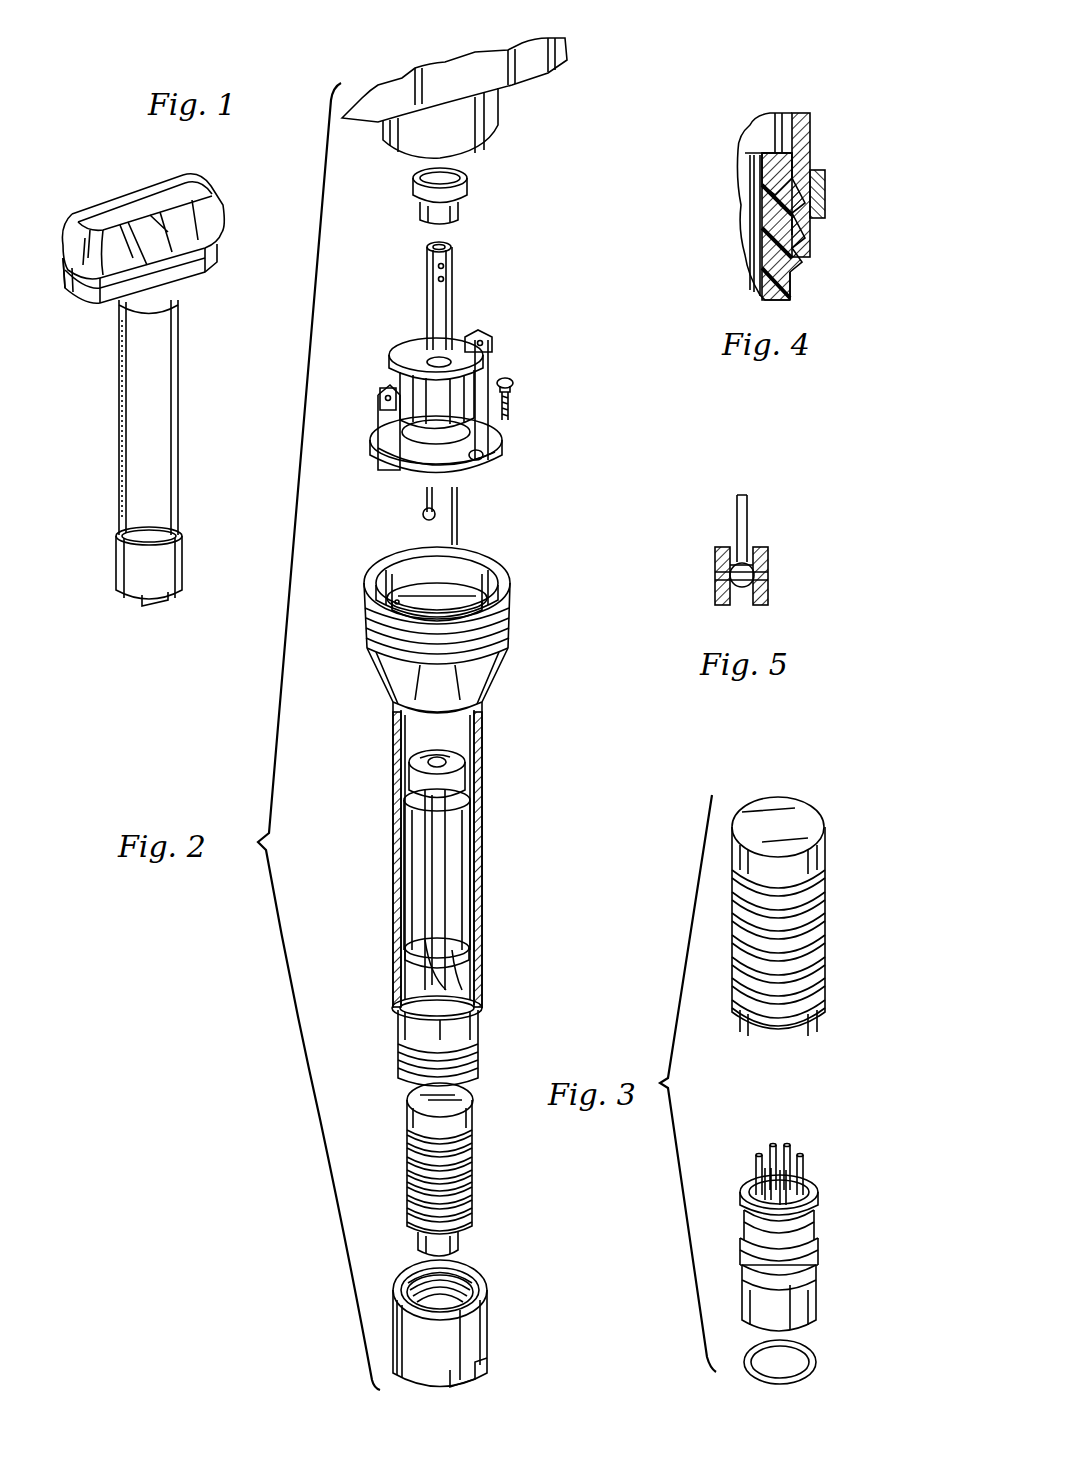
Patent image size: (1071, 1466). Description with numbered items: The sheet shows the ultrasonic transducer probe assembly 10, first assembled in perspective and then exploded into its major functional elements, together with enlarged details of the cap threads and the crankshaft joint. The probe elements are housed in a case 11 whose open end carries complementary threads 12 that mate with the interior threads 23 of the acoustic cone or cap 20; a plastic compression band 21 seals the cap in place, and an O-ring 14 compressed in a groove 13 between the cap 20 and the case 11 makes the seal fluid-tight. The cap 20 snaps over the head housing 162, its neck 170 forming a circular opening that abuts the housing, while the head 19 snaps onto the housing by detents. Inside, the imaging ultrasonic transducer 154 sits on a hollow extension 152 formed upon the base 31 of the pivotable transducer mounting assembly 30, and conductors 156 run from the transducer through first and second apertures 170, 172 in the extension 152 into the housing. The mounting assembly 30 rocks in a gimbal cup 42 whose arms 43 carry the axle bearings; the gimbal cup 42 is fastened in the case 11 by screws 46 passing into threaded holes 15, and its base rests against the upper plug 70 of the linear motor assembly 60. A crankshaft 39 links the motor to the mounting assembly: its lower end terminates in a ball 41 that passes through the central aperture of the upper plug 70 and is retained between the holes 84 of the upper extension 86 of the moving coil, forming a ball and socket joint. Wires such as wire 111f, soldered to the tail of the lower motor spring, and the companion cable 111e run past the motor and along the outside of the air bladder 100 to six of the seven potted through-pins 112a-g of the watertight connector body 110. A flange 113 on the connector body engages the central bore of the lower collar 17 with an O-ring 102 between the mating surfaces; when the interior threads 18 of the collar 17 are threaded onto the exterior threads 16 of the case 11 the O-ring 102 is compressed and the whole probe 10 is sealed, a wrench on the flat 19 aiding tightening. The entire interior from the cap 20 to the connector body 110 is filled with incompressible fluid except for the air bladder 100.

In FIG. 1, the ultrasonic transducer probe assembly 10 is at (114, 394).
In FIG. 1, the case 11 is at (170, 380).
In FIG. 2, the case 11 is at (395, 735).
In FIG. 4, the case 11 is at (790, 296).
In FIG. 2, the complementary threads 12 is at (508, 626).
In FIG. 4, the complementary threads 12 is at (798, 270).
In FIG. 2, the groove 13 is at (508, 600).
In FIG. 4, the groove 13 is at (770, 155).
In FIG. 4, the O-ring 14 is at (770, 182).
In FIG. 2, the threaded holes 15 is at (400, 600).
In FIG. 2, the exterior threads 16 is at (475, 1062).
In FIG. 1, the lower sleeve 17 is at (128, 574).
In FIG. 2, the lower sleeve 17 is at (478, 1325).
In FIG. 2, the interior threads 18 is at (428, 1276).
In FIG. 1, the flat 19 is at (212, 184).
In FIG. 2, the flat 19 is at (575, 45).
In FIG. 1, the acoustic cone or cap 20 is at (222, 214).
In FIG. 4, the acoustic cone or cap 20 is at (812, 125).
In FIG. 4, the plastic compression band 21 is at (826, 200).
In FIG. 4, the interior threads 23 is at (768, 236).
In FIG. 2, the pivotable transducer mounting assembly 30 is at (505, 448).
In FIG. 2, the base 31 is at (465, 367).
In FIG. 2, the crankshaft 39 is at (424, 494).
In FIG. 5, the crankshaft 39 is at (748, 498).
In FIG. 2, the ball 41 is at (424, 516).
In FIG. 5, the ball 41 is at (742, 588).
In FIG. 2, the gimbal cup 42 is at (478, 480).
In FIG. 2, the arms 43 is at (384, 440).
In FIG. 2, the screws 46 is at (512, 400).
In FIG. 2, the linear motor assembly 60 is at (480, 876).
In FIG. 2, the upper plug 70 is at (455, 766).
In FIG. 5, the holes 84 is at (716, 576).
In FIG. 5, the upper extension 86 is at (768, 552).
In FIG. 2, the air bladder 100 is at (404, 1168).
In FIG. 3, the air bladder 100 is at (830, 1000).
In FIG. 3, the O-ring 102 is at (808, 1348).
In FIG. 2, the connector body 110 is at (460, 1242).
In FIG. 3, the connector body 110 is at (826, 1218).
In FIG. 2, the cable 111e is at (408, 955).
In FIG. 2, the wire 111f is at (478, 970).
In FIG. 3, the through-pins 112a-g is at (797, 1172).
In FIG. 3, the flange 113 is at (816, 1284).
In FIG. 2, the extension 152 is at (452, 304).
In FIG. 2, the imaging ultrasonic transducer 154 is at (470, 180).
In FIG. 2, the conductors 156 is at (465, 252).
In FIG. 1, the head housing 162 is at (78, 290).
In FIG. 1, the neck 170 is at (180, 296).
In FIG. 2, the neck 170 is at (488, 113).
In FIG. 2, the second aperture 172 is at (436, 280).